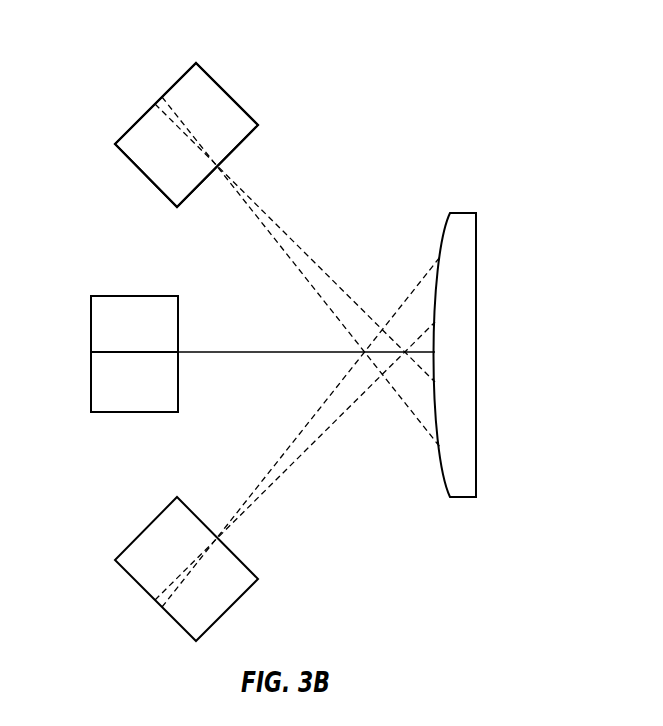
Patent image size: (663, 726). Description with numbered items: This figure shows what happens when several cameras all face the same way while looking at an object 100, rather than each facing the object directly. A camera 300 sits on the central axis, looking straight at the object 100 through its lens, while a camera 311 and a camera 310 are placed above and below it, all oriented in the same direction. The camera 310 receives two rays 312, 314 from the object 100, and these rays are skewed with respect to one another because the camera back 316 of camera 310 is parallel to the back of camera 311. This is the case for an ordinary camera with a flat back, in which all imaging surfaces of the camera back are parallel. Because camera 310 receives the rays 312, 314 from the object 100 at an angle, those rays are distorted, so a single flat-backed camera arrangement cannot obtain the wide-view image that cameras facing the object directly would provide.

The object 100 is at (476, 240).
The camera 300 is at (91, 322).
The camera 311 is at (135, 413).
The camera 310 is at (228, 95).
The camera back 316 is at (137, 123).
The ray 312 is at (268, 215).
The ray 314 is at (282, 248).